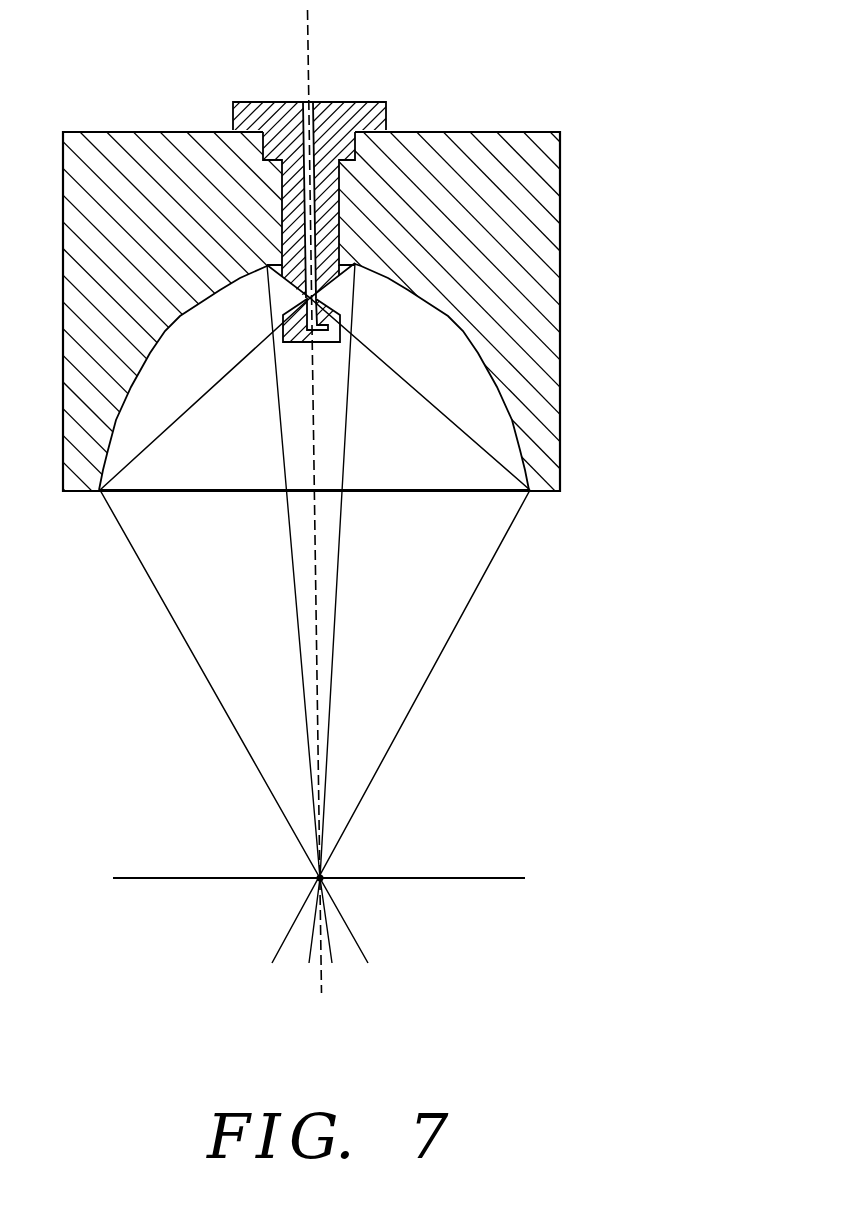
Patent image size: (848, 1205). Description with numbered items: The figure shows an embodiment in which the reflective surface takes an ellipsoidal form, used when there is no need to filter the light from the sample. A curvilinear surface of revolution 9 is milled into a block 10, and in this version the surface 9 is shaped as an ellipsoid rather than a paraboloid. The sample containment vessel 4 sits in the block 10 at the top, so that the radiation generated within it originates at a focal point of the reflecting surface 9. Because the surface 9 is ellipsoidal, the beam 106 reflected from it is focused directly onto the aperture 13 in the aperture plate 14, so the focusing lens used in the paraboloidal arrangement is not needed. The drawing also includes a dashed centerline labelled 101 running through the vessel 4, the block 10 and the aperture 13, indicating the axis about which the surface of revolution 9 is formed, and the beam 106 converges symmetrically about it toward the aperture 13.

The sample containment vessel 4 is at (395, 107).
The curvilinear surface of revolution 9 is at (506, 378).
The block 10 is at (576, 164).
The aperture 13 is at (328, 873).
The plate 14 is at (173, 877).
The optical axis 101 is at (308, 68).
The beam 106 is at (428, 625).